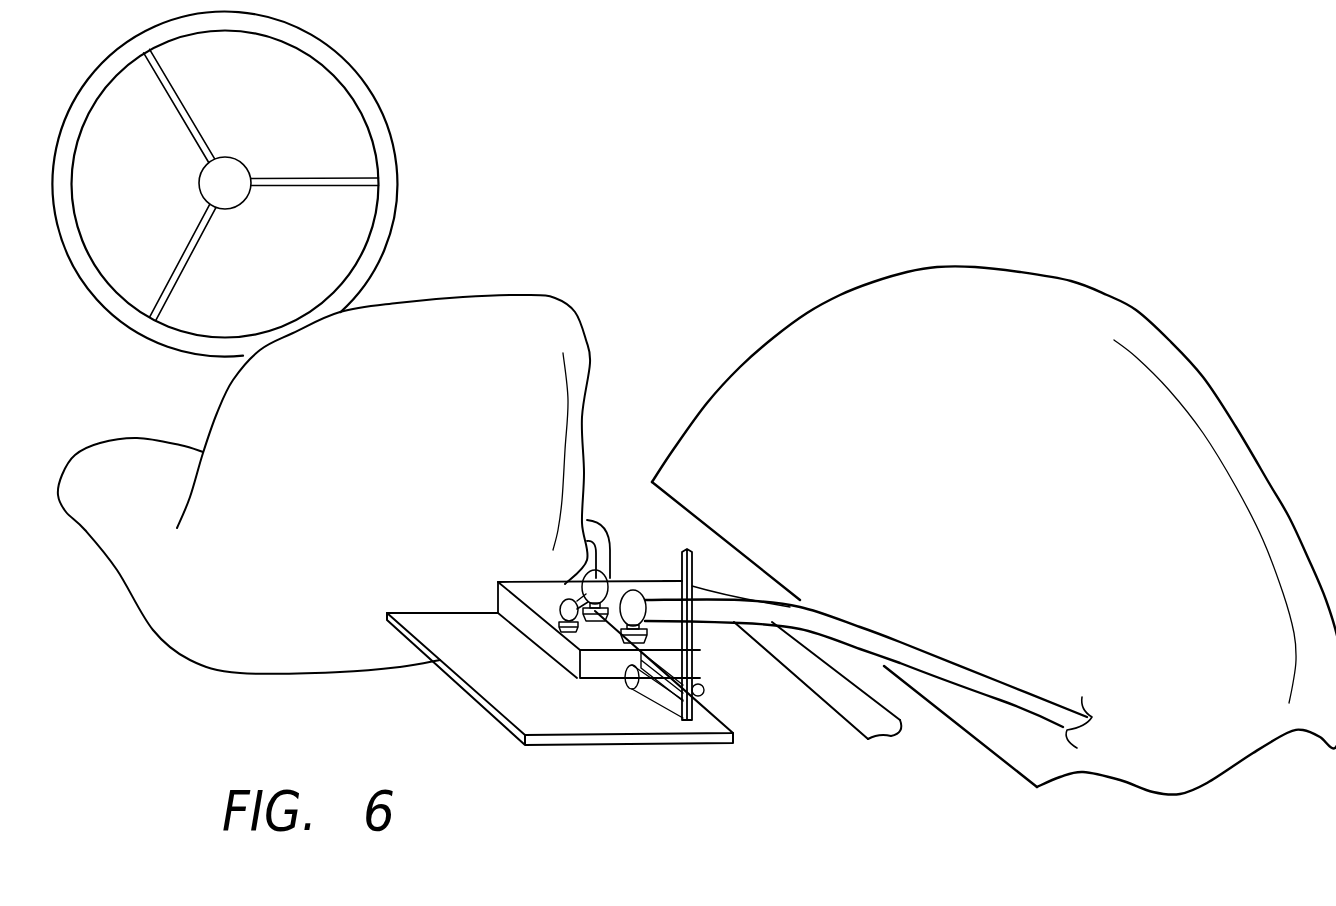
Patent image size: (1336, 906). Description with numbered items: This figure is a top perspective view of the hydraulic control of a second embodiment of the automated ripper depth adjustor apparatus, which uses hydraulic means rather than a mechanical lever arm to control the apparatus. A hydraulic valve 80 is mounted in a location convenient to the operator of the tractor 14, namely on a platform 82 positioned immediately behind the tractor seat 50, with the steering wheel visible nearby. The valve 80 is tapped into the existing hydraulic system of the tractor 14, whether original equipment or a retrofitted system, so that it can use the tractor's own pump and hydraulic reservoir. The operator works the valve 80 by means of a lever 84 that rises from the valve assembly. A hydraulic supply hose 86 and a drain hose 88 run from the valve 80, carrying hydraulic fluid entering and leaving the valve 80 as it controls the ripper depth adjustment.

The tractor 14 is at (1138, 335).
The tractor seat 50 is at (560, 327).
The hydraulic valve 80 is at (523, 590).
The platform 82 is at (518, 680).
The lever 84 is at (692, 580).
The hydraulic supply hose 86 is at (833, 702).
The drain hose 88 is at (985, 685).